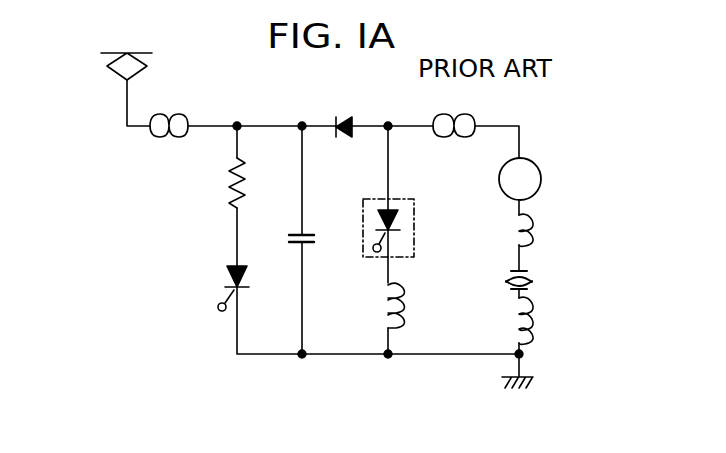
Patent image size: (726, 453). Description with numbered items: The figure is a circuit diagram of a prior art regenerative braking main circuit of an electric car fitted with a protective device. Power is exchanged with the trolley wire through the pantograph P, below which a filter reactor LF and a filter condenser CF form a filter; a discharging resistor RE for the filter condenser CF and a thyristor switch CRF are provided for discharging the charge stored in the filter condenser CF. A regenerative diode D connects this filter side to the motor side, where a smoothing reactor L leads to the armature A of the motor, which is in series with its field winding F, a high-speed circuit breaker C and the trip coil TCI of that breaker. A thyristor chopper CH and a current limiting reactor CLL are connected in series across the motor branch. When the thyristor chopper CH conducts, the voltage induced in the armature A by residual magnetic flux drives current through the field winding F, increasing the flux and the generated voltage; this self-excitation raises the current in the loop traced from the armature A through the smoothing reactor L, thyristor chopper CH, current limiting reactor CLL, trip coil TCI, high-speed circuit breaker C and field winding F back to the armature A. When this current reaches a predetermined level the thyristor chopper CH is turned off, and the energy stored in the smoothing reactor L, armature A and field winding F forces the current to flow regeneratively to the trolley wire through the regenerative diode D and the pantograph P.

The pantograph P is at (104, 66).
The filter reactor LF is at (174, 119).
The discharging resistor RE is at (230, 180).
The thyristor switch CRF is at (228, 276).
The filter condenser CF is at (330, 223).
The regenerative diode D is at (341, 119).
The thyristor chopper CH is at (415, 238).
The current limiting reactor CLL is at (399, 312).
The smoothing reactor L is at (455, 118).
The armature A is at (543, 178).
The field winding F is at (538, 233).
The high-speed circuit breaker C is at (535, 283).
The trip coil TCI is at (532, 328).